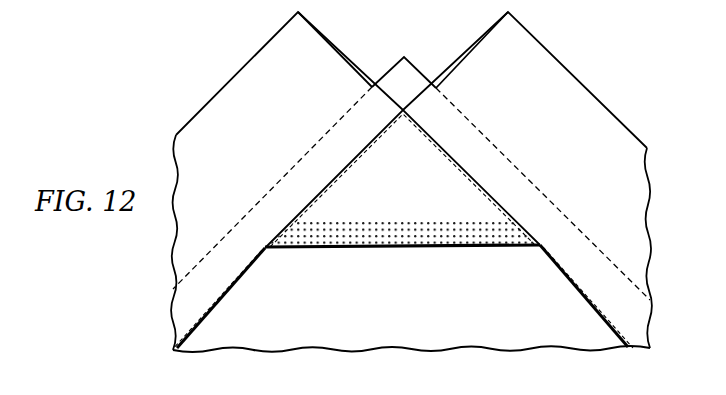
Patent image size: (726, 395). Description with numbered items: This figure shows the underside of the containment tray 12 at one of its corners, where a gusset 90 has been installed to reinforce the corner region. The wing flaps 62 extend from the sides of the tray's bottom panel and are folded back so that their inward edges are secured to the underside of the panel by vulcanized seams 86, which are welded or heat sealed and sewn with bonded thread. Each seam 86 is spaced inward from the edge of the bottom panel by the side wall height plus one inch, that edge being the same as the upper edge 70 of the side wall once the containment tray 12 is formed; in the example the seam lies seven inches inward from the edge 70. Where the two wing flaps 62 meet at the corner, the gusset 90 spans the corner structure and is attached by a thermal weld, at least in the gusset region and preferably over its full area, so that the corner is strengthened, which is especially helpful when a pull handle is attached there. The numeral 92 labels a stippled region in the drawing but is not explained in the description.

The containment tray 12 is at (395, 74).
The wing flap 62 is at (320, 32).
The upper edge 70 is at (229, 81).
The vulcanized seam 86 is at (236, 288).
The gusset 90 is at (423, 248).
The vent mesh material 92 is at (383, 222).